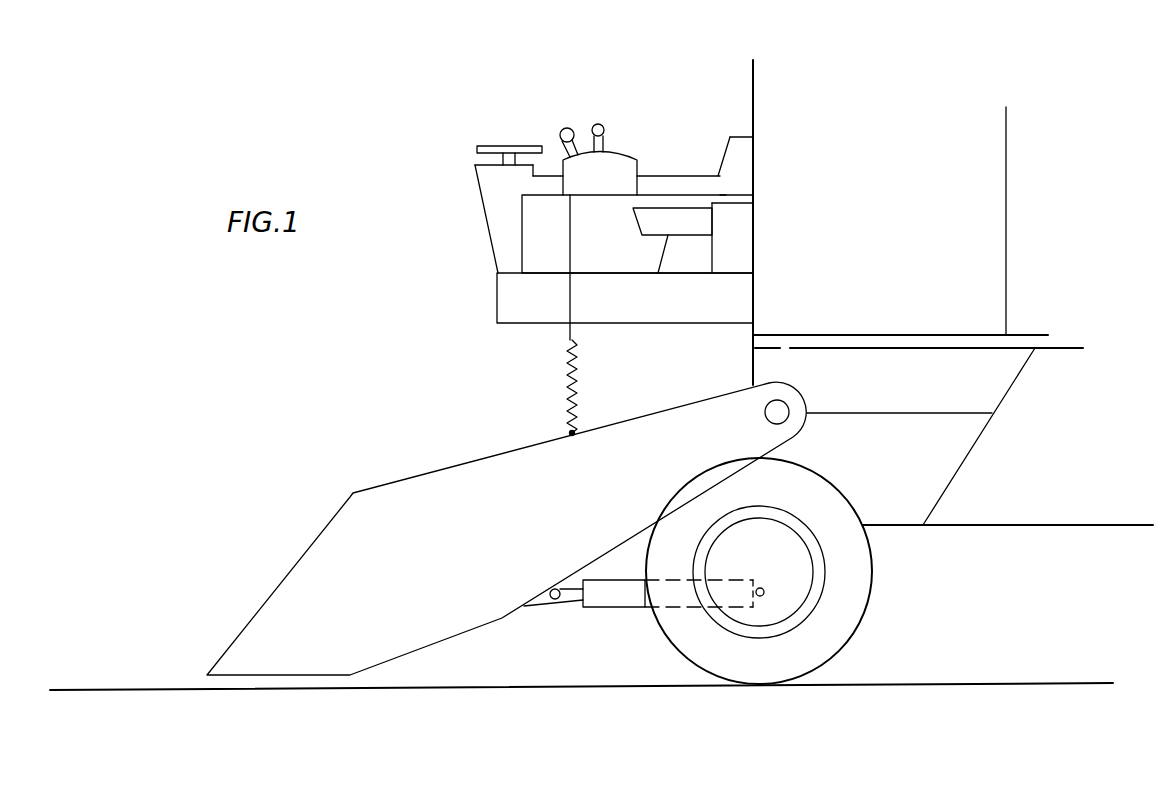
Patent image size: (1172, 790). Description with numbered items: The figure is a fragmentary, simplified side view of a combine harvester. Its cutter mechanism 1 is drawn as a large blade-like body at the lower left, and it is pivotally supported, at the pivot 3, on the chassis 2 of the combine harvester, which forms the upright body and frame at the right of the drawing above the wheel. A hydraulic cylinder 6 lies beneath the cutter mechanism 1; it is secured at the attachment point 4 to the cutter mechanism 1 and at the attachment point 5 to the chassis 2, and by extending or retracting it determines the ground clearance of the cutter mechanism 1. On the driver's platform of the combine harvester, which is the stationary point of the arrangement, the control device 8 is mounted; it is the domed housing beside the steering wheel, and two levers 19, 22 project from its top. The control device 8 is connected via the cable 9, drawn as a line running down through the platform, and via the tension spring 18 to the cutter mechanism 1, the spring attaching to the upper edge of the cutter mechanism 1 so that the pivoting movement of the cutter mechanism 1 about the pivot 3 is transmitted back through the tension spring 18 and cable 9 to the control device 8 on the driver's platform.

The cutter mechanism 1 is at (390, 500).
The chassis 2 is at (947, 452).
The pivot support 3 is at (785, 402).
The cylinder attachment to cutter mechanism 4 is at (552, 600).
The cylinder attachment to chassis 5 is at (762, 590).
The hydraulic cylinder 6 is at (620, 603).
The control device 8 is at (627, 168).
The cable 9 is at (575, 303).
The tension spring 18 is at (566, 372).
The control lever 19 is at (562, 129).
The control lever 22 is at (604, 131).